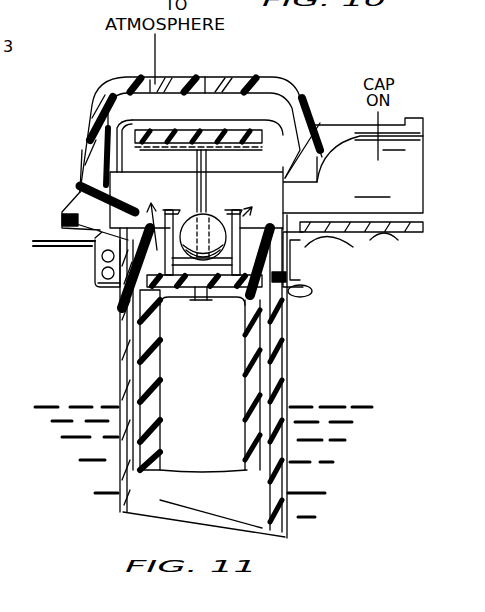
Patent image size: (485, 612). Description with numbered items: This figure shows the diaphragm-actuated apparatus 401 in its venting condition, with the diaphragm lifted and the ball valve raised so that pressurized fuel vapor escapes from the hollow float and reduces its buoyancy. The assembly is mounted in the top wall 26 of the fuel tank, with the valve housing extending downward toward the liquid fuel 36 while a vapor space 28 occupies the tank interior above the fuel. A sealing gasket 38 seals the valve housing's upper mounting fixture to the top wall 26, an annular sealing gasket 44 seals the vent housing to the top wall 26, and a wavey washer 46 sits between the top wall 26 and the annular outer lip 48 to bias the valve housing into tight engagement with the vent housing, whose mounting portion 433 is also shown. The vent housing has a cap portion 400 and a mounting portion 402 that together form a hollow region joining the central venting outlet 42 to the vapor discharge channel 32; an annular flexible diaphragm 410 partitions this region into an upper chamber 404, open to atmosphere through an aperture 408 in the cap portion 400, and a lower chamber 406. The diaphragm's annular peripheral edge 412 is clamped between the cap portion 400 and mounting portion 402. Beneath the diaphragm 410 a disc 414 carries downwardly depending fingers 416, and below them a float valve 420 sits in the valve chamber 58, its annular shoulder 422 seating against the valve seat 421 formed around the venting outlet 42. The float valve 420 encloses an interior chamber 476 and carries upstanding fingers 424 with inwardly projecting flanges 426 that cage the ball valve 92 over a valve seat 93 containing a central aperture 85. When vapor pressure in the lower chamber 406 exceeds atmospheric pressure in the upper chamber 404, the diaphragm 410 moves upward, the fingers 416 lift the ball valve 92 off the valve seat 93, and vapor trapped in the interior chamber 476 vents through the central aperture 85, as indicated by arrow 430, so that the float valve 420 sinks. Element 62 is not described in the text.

The top wall 26 is at (386, 236).
The vapor space 28 is at (392, 351).
The vapor discharge channel 32 is at (341, 148).
The liquid fuel 36 is at (350, 494).
The sealing gasket 38 is at (291, 296).
The central venting outlet 42 is at (69, 128).
The annular sealing gasket 44 is at (362, 238).
The wavey washer 46 is at (90, 249).
The annular outer lip 48 is at (310, 233).
The valve chamber 58 is at (268, 310).
The wall 62 is at (272, 338).
The central aperture 85 is at (217, 291).
The ball valve 92 is at (303, 266).
The valve seat 93 is at (267, 288).
The cap portion 400 is at (102, 100).
The apparatus 401 is at (306, 88).
The mounting portion 402 is at (82, 194).
The upper chamber 404 is at (205, 100).
The lower chamber 406 is at (280, 203).
The aperture 408 is at (148, 78).
The annular flexible diaphragm 410 is at (222, 134).
The annular peripheral edge 412 is at (100, 166).
The disc 414 is at (173, 154).
The downwardly depending fingers 416 is at (209, 204).
The float valve 420 is at (143, 350).
The valve seat 421 is at (277, 362).
The annular shoulder 422 is at (157, 306).
The upstanding fingers 424 is at (235, 262).
The inwardly projecting flanges 426 is at (168, 212).
The arrow 430 is at (193, 302).
The mounting portion 433 is at (110, 285).
The interior chamber 476 is at (205, 437).